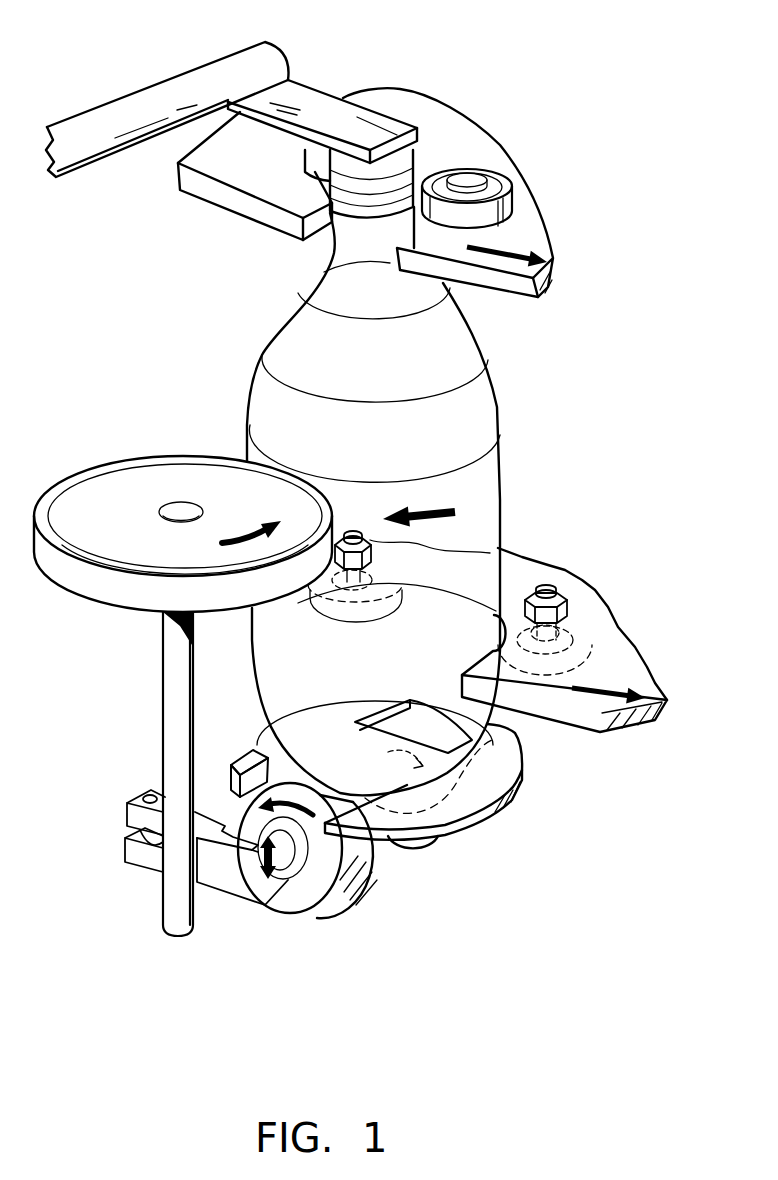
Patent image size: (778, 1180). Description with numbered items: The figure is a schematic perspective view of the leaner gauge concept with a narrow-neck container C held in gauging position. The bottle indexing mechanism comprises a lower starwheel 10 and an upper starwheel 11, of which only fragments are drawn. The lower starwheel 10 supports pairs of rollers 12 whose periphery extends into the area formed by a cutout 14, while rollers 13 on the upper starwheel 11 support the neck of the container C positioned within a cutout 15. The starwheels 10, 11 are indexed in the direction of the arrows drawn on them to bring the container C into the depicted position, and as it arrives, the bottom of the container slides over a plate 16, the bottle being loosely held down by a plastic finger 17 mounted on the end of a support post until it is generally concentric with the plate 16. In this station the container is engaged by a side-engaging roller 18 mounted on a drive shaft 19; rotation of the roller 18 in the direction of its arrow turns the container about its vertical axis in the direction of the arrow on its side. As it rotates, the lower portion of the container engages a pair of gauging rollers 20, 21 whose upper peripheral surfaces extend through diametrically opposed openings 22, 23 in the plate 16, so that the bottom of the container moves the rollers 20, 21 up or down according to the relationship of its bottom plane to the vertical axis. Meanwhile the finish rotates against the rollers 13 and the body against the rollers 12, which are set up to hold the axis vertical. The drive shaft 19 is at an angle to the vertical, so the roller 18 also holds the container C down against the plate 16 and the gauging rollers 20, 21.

The lower starwheel 10 is at (537, 567).
The upper starwheel 11 is at (478, 128).
The rollers 12 is at (593, 650).
The rollers 13 is at (513, 203).
The cutout 14 is at (502, 617).
The cutout 15 is at (320, 237).
The plate 16 is at (505, 772).
The plastic finger 17 is at (317, 97).
The side-engaging roller 18 is at (85, 582).
The drive shaft 19 is at (177, 915).
The gauging roller 20 is at (300, 913).
The gauging roller 21 is at (419, 855).
The opening 22 is at (263, 782).
The opening 23 is at (397, 708).
The container C is at (503, 421).